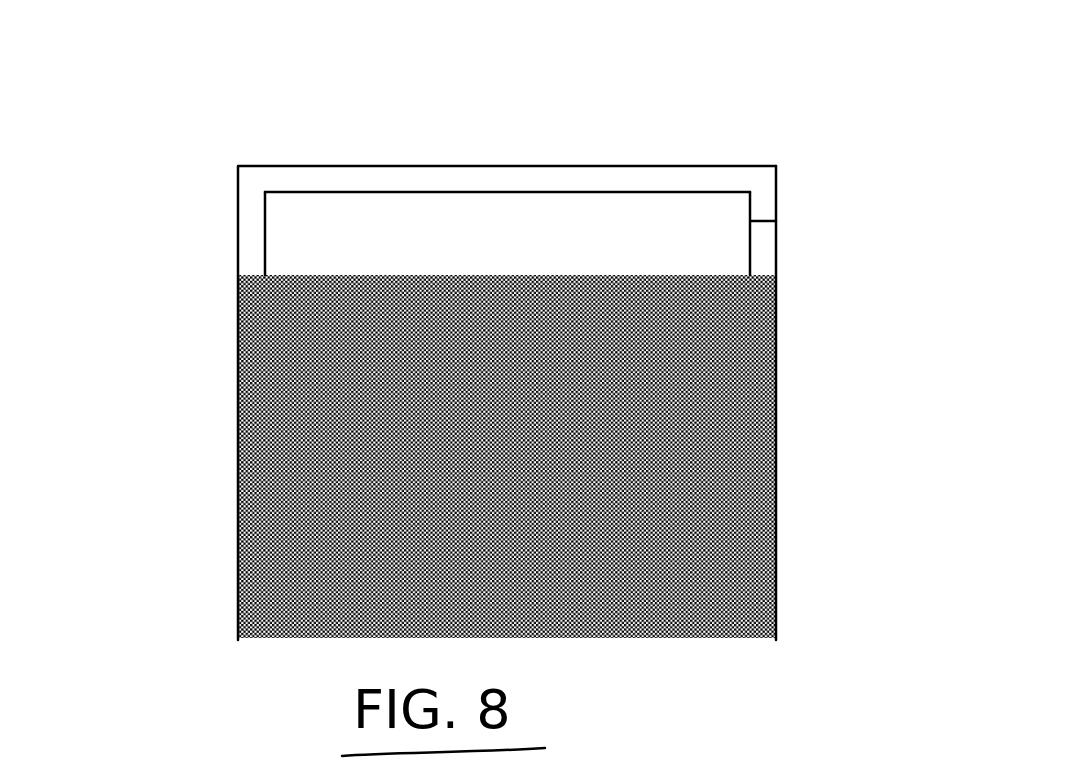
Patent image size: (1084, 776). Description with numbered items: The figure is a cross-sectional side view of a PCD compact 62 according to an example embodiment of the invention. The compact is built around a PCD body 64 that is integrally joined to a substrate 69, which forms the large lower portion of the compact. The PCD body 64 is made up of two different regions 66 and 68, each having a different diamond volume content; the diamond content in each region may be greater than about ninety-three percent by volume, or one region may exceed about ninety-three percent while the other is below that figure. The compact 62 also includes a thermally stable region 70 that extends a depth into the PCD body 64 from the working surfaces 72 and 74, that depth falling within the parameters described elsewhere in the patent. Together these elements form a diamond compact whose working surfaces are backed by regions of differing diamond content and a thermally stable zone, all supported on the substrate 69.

The PCD compact 62 is at (720, 130).
The PCD body 64 is at (265, 231).
The first diamond region 66 is at (458, 175).
The second diamond region 68 is at (354, 232).
The substrate 69 is at (767, 453).
The thermally stable region 70 is at (760, 192).
The working surface 72 is at (593, 155).
The working surface 74 is at (768, 230).